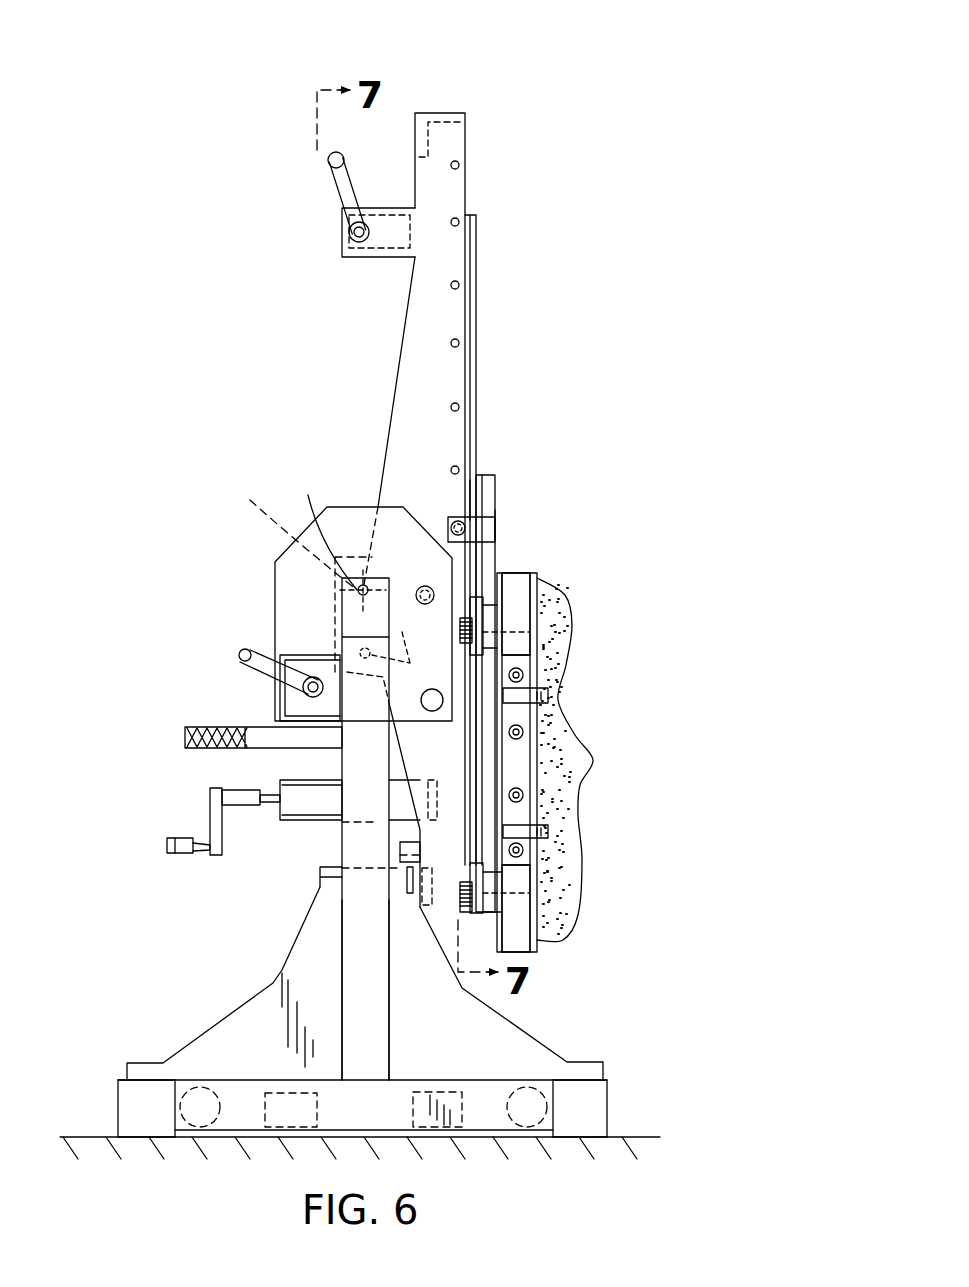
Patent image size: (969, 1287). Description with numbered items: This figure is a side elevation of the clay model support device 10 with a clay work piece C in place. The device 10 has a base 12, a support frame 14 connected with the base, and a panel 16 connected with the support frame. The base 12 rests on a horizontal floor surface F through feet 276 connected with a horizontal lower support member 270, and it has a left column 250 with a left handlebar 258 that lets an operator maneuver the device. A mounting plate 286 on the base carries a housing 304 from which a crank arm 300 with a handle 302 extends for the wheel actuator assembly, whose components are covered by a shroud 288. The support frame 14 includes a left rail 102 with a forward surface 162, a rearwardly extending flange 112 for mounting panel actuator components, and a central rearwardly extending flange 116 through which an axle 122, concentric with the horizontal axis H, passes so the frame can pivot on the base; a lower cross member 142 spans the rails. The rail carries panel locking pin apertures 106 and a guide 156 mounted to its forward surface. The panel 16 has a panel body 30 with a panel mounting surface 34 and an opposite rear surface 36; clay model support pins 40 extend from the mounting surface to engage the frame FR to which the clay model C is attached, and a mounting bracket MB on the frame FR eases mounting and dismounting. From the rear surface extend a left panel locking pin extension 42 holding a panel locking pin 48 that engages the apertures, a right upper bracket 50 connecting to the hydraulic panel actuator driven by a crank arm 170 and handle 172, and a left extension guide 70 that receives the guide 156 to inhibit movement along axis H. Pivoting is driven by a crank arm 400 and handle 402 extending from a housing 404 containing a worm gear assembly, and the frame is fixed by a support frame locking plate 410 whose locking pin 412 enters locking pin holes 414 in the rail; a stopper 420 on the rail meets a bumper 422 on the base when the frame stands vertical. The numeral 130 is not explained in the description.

The clay model support device 10 is at (598, 154).
The base 12 is at (280, 940).
The support frame 14 is at (397, 347).
The panel 16 is at (508, 504).
The panel body 30 is at (490, 475).
The panel mounting surface 34 is at (497, 522).
The rear surface 36 is at (467, 500).
The clay model support pin 40 is at (525, 649).
The left panel locking pin extension 42 is at (477, 532).
The panel locking pin 48 is at (450, 518).
The right upper bracket 50 is at (478, 474).
The left extension guide 70 is at (478, 606).
The left rail 102 is at (413, 367).
The panel locking pin apertures 106 is at (459, 344).
The rearwardly extending flange 112 is at (385, 254).
The central rearwardly extending flange 116 is at (283, 527).
The axle 122 is at (358, 590).
The top cap 130 is at (445, 113).
The lower cross member 142 is at (363, 990).
The left guide 156 is at (477, 256).
The forward surface 162 is at (466, 196).
The crank arm 170 is at (330, 183).
The handle 172 is at (328, 160).
The left column 250 is at (380, 1036).
The left handlebar 258 is at (185, 745).
The horizontal lower support member 270 is at (477, 1093).
The feet 276 is at (127, 1097).
The mounting plate 286 is at (320, 822).
The shroud 288 is at (250, 1008).
The crank arm 300 is at (212, 822).
The handle 302 is at (180, 855).
The housing 304 is at (307, 800).
The crank arm 400 is at (270, 660).
The handle 402 is at (239, 654).
The housing 404 is at (290, 704).
The support frame locking plate 410 is at (287, 569).
The support frame locking pin 412 is at (421, 585).
The support frame locking pin holes 414 is at (405, 659).
The stopper 420 is at (413, 848).
The bumper 422 is at (400, 868).
The horizontal axis H is at (326, 527).
The frame FR is at (517, 582).
The clay work piece C is at (575, 740).
The mounting bracket MB is at (520, 815).
The horizontal floor surface F is at (625, 1135).